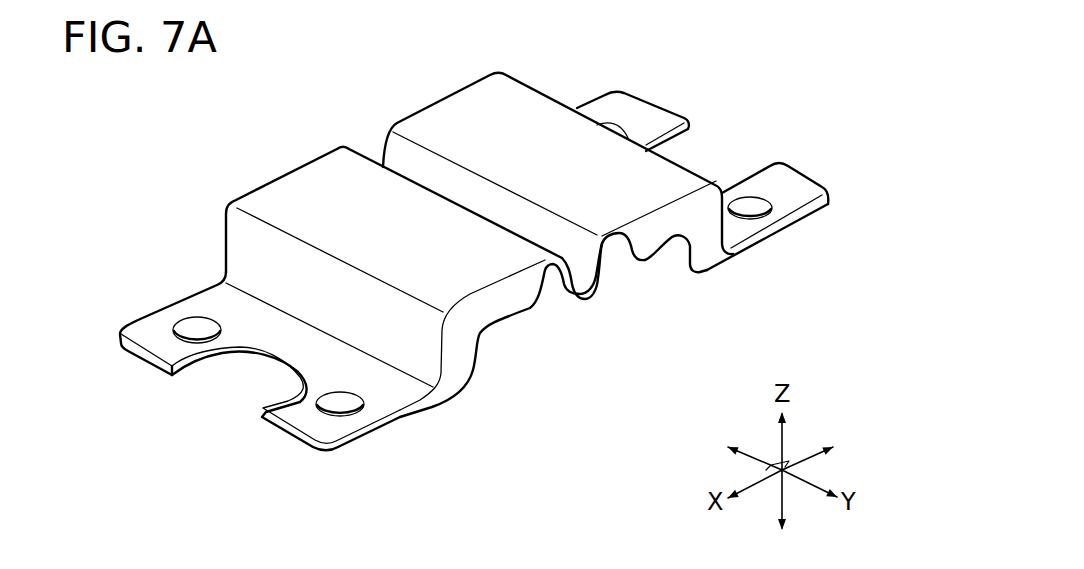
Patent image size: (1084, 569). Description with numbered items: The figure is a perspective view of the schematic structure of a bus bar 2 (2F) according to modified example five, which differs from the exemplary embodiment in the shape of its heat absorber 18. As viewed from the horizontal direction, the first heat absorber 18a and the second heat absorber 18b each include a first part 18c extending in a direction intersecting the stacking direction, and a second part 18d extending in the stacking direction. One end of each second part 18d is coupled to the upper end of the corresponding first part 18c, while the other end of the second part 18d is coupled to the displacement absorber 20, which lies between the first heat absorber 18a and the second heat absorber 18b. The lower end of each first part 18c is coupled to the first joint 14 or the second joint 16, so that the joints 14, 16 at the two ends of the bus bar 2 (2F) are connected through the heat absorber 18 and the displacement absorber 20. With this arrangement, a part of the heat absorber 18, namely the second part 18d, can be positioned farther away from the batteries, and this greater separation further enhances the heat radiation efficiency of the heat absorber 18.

The bus bar 2 is at (463, 269).
The bus bar 2F is at (545, 510).
The first joint 14 is at (136, 320).
The second joint 16 is at (624, 94).
The heat absorber 18 is at (510, 245).
The first heat absorber 18a is at (506, 313).
The second heat absorber 18b is at (661, 233).
The first part 18c is at (460, 362).
The second part 18d is at (503, 295).
The displacement absorber 20 is at (600, 290).